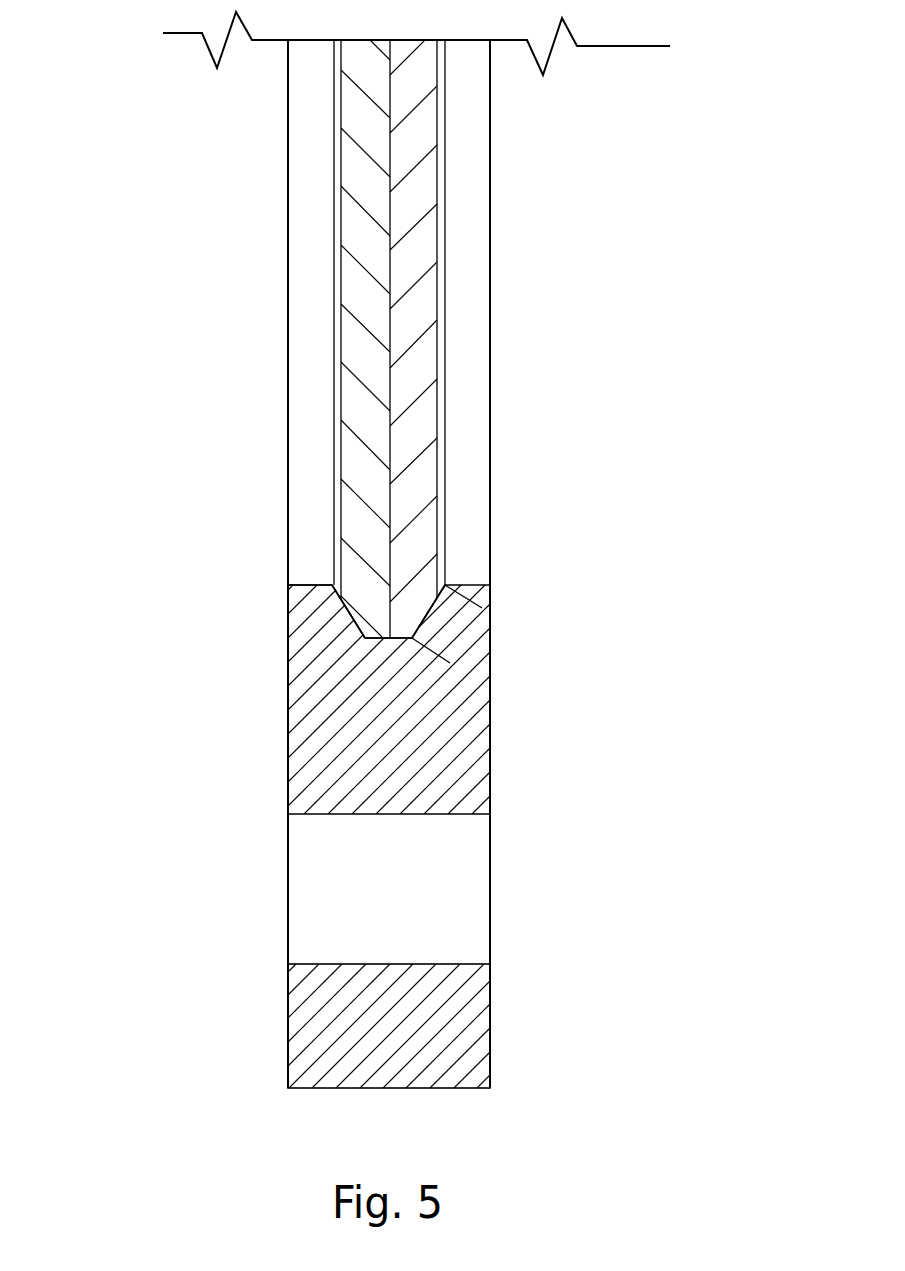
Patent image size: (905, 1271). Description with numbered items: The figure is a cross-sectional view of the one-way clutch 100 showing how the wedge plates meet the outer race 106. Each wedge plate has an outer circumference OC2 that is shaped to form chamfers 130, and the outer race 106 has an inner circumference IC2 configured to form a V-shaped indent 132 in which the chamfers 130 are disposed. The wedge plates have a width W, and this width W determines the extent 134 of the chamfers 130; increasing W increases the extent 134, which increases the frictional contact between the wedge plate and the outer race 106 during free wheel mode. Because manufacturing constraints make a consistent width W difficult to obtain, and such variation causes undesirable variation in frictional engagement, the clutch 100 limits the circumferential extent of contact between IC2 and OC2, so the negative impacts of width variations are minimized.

The one-way clutch 100 is at (662, 143).
The outer race 106 is at (496, 1013).
The chamfers 130 is at (352, 628).
The V-shaped indent 132 is at (423, 650).
The extent of the chamfers 134 is at (467, 592).
The inner circumference of the outer race IC2 is at (313, 585).
The outer circumference of the wedge plate OC2 is at (393, 650).
The width of the wedge plates W is at (390, 305).